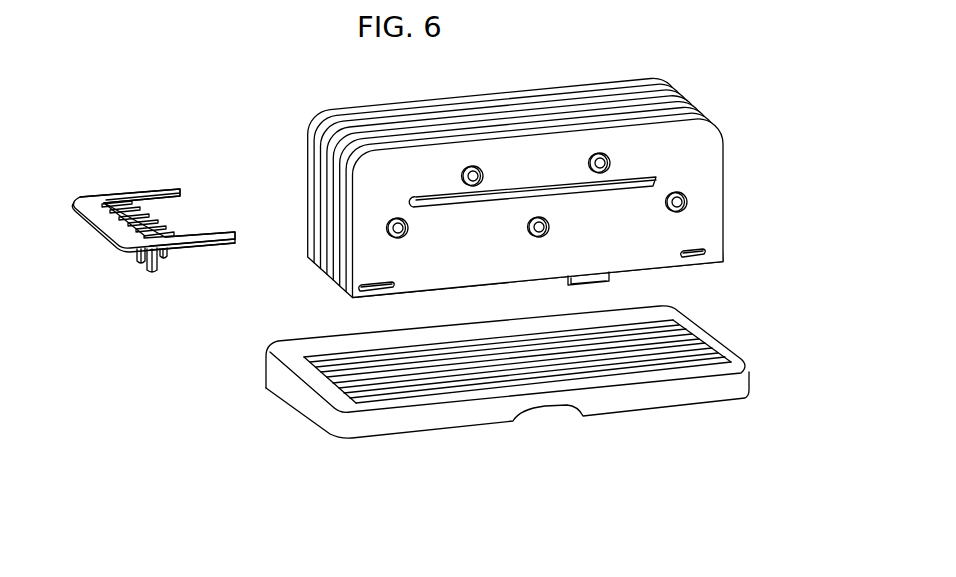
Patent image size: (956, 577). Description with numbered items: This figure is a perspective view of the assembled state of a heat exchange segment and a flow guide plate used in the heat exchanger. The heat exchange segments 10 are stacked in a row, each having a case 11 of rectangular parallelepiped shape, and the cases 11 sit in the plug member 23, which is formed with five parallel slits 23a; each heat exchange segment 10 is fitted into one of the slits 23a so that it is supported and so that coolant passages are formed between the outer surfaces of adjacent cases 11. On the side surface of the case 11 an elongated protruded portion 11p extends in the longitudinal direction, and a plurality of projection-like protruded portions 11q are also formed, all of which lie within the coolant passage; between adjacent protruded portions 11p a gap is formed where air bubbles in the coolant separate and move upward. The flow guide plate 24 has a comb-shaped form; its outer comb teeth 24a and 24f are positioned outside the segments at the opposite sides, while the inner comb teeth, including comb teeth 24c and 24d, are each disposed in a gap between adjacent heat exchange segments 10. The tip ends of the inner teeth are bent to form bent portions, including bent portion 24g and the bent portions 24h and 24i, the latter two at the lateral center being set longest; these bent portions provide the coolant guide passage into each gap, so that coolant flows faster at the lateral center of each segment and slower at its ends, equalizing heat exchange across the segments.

The heat exchange segment 10 is at (330, 110).
The case 11 is at (720, 128).
The protruded portion 11p is at (658, 178).
The protruded portion 11q is at (687, 200).
The plug member 23 is at (293, 397).
The slit 23a is at (720, 355).
The flow guide plate 24 is at (112, 227).
The comb tooth 24a is at (200, 247).
The comb tooth 24c is at (152, 222).
The comb tooth 24d is at (140, 210).
The comb tooth 24f is at (147, 190).
The bent portion 24g is at (167, 260).
The bent portion 24h is at (153, 272).
The bent portion 24i is at (142, 263).